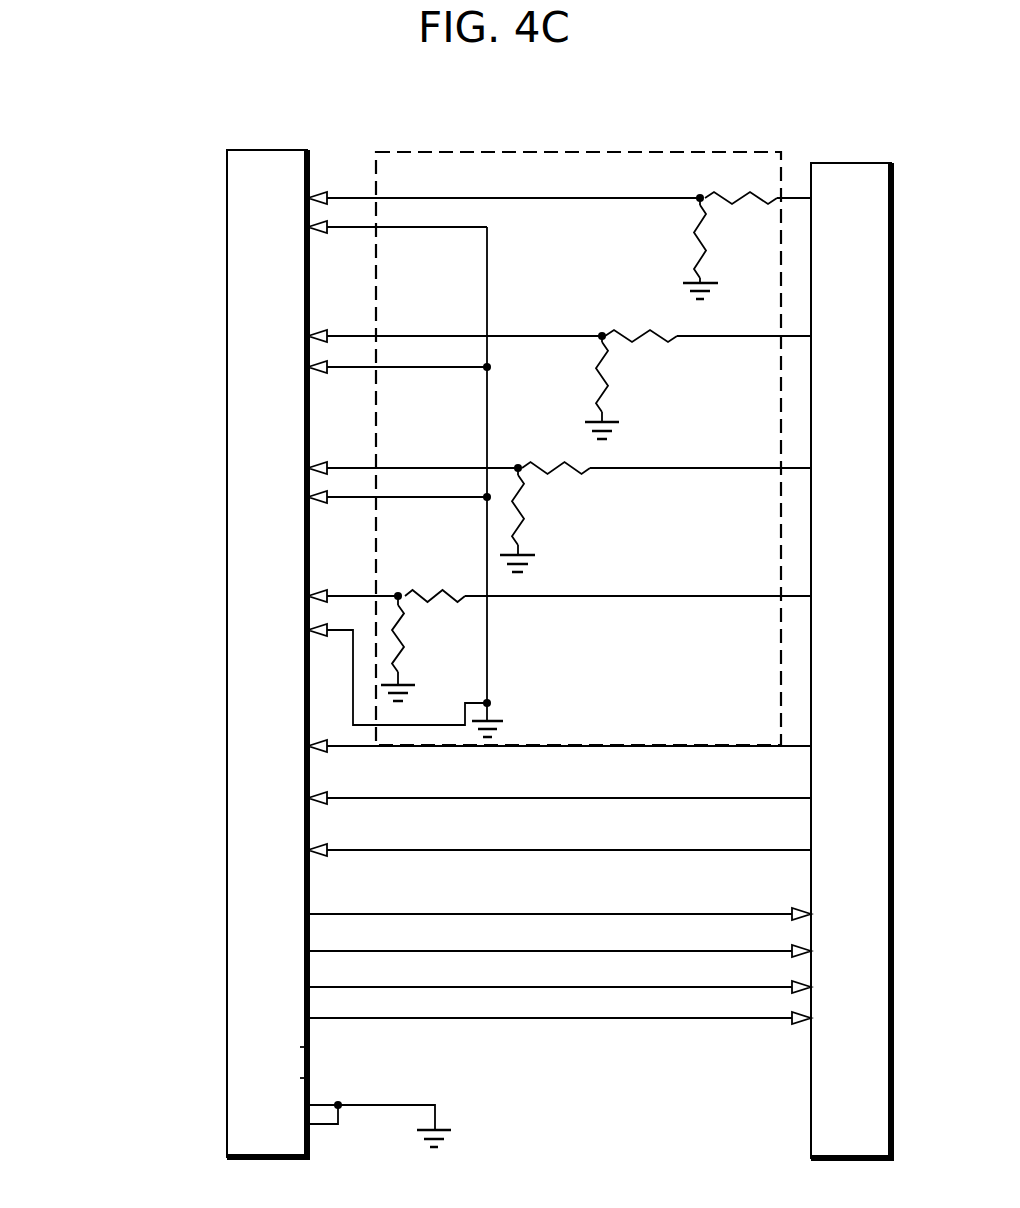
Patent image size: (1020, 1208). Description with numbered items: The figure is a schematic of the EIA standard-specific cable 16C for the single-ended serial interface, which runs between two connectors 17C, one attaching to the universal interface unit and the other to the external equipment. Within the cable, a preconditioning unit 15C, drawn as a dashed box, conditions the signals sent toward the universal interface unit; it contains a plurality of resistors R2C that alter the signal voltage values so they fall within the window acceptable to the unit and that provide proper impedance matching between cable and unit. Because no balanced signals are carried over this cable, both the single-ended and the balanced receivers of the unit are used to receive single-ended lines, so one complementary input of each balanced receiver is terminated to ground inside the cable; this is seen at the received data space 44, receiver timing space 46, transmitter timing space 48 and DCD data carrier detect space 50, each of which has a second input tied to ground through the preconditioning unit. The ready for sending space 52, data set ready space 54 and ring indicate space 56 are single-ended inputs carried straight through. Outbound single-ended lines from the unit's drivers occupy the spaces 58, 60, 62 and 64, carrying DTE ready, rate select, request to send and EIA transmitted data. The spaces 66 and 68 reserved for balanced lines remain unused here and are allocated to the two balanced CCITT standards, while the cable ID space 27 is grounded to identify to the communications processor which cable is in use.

The EIA-232-D standard-specific cable 16C is at (325, 98).
The connector 17C is at (255, 150).
The preconditioning unit 15C is at (545, 152).
The resistor R2C is at (584, 416).
The received data connector space 44 is at (532, 212).
The receiver timing connector space 46 is at (532, 351).
The transmitter timing connector space 48 is at (532, 482).
The data carrier detect connector space 50 is at (532, 657).
The ready for sending connector space 52 is at (532, 746).
The data set ready connector space 54 is at (532, 796).
The ring indicate connector space 56 is at (532, 848).
The single-ended signal line connector space 58 is at (532, 913).
The single-ended signal line connector space 60 is at (532, 950).
The single-ended signal line connector space 62 is at (532, 984).
The single-ended signal line connector space 64 is at (532, 1017).
The balanced signal line connector space 66 is at (280, 1047).
The balanced signal line connector space 68 is at (280, 1078).
The cable ID connector space 27 is at (352, 1124).